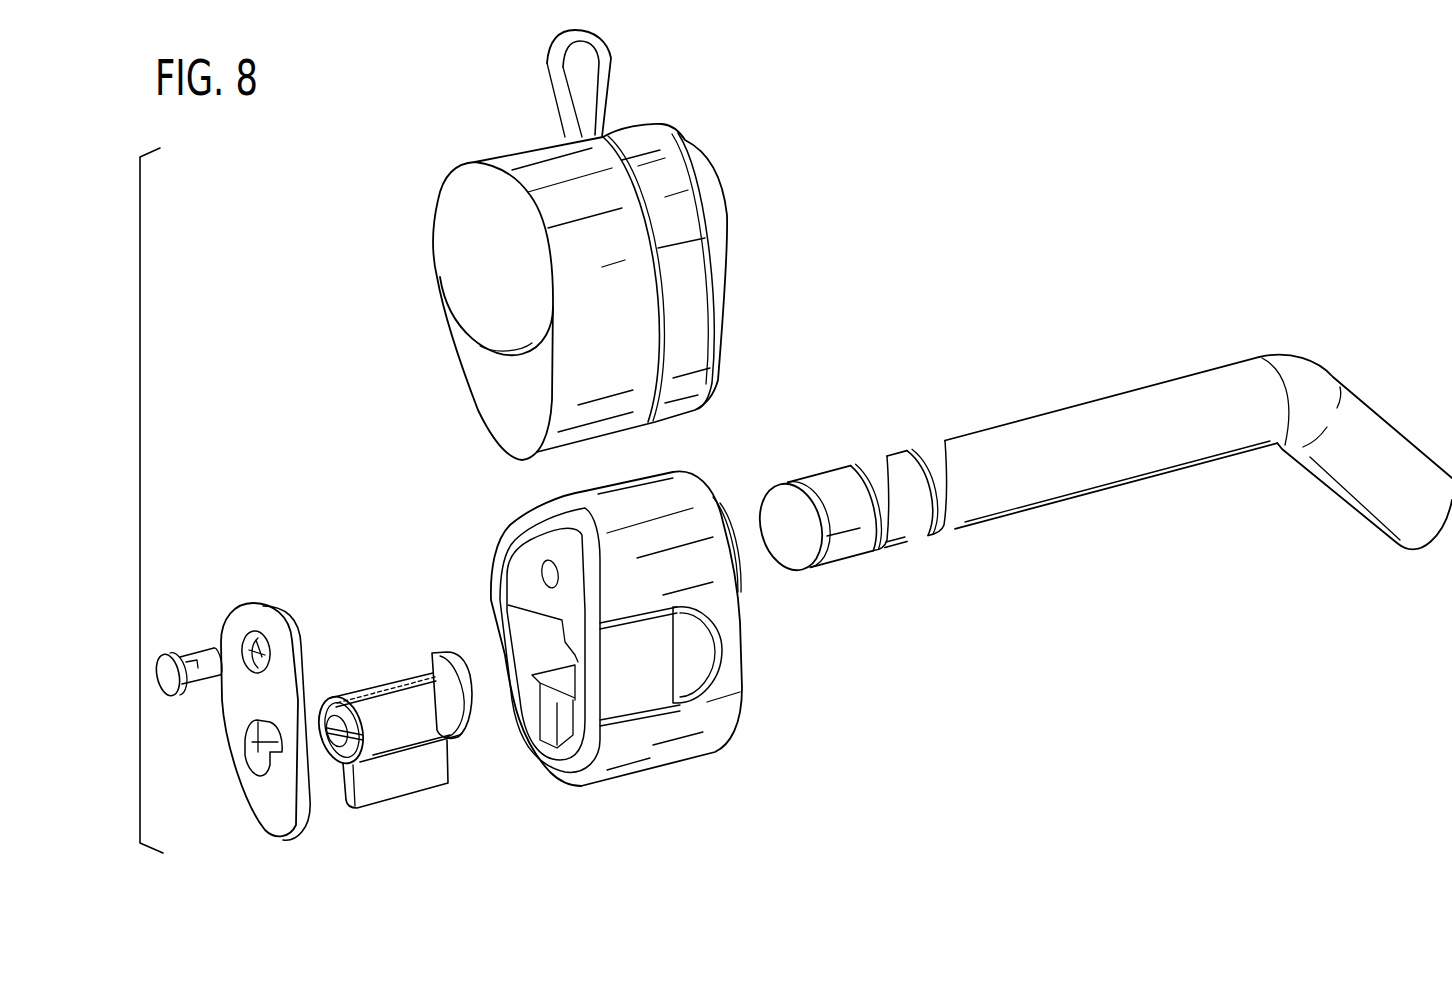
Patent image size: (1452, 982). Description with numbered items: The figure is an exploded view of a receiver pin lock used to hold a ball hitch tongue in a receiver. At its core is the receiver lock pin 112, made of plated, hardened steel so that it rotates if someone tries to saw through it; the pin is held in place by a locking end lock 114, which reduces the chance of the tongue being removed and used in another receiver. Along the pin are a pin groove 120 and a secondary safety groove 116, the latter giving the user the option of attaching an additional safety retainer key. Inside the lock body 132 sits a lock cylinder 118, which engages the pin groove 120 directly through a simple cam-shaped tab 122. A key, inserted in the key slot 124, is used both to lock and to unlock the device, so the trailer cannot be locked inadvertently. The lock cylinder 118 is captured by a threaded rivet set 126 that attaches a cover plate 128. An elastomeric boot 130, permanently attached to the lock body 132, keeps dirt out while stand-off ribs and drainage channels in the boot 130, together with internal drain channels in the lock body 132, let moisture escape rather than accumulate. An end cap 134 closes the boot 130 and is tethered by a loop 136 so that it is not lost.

The receiver lock pin 112 is at (1220, 366).
The locking end lock 114 is at (549, 738).
The secondary safety groove 116 is at (902, 440).
The lock cylinder 118 is at (400, 800).
The pin groove 120 is at (851, 455).
The cam-shaped tab 122 is at (437, 648).
The key slot 124 is at (312, 742).
The threaded rivet set 126 is at (192, 704).
The cover plate 128 is at (235, 608).
The elastomeric boot 130 is at (469, 203).
The lock body 132 is at (682, 760).
The end cap 134 is at (492, 268).
The loop 136 is at (548, 40).